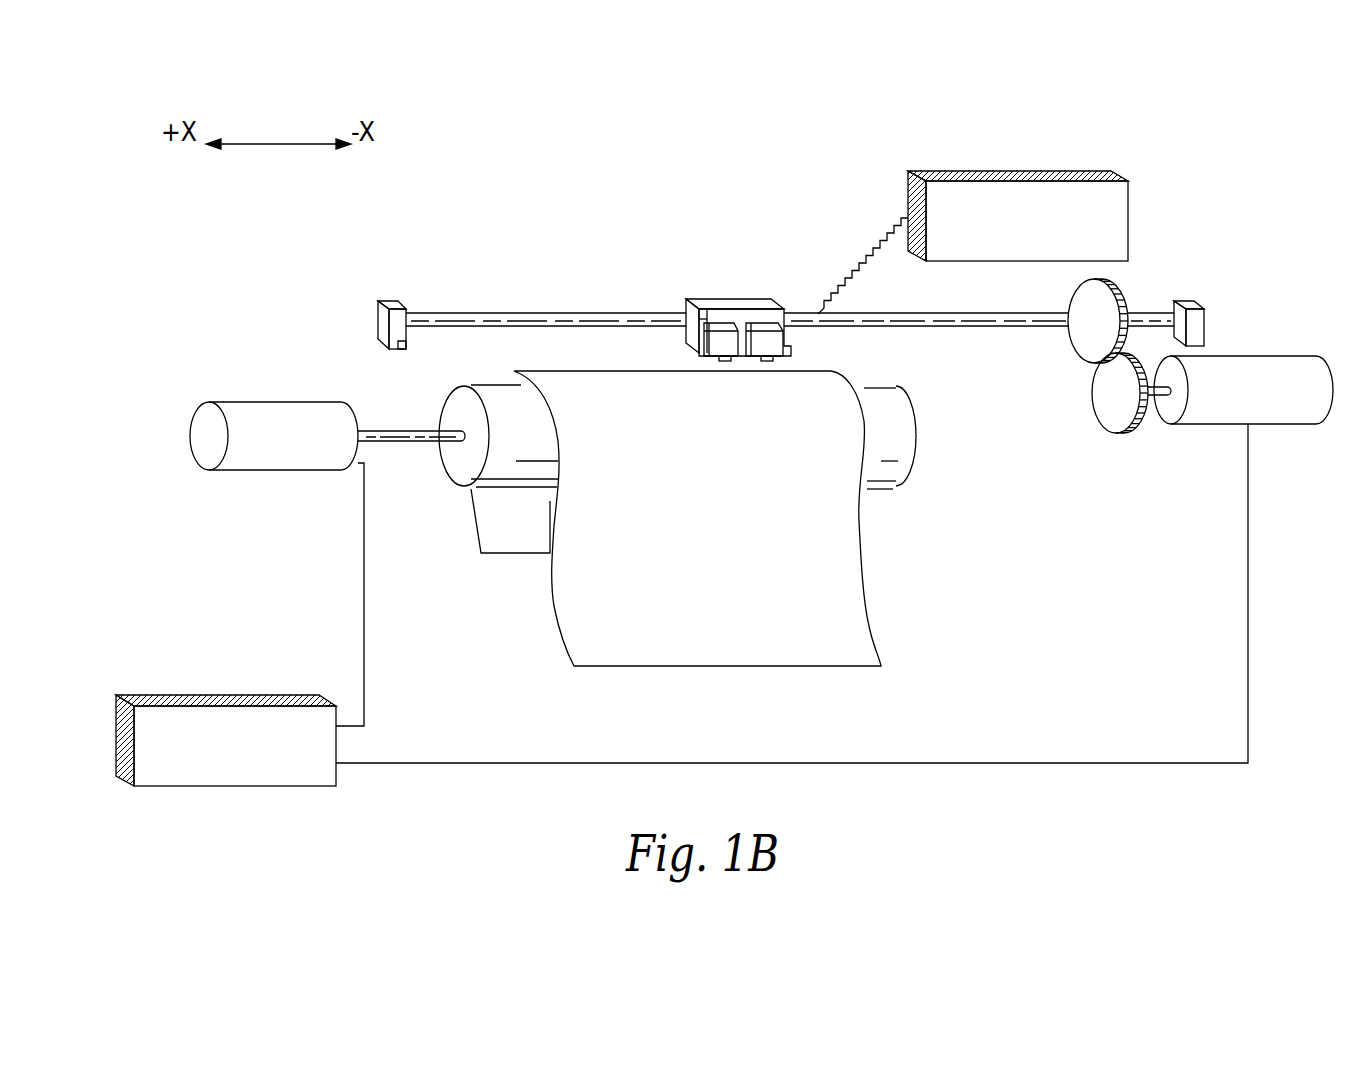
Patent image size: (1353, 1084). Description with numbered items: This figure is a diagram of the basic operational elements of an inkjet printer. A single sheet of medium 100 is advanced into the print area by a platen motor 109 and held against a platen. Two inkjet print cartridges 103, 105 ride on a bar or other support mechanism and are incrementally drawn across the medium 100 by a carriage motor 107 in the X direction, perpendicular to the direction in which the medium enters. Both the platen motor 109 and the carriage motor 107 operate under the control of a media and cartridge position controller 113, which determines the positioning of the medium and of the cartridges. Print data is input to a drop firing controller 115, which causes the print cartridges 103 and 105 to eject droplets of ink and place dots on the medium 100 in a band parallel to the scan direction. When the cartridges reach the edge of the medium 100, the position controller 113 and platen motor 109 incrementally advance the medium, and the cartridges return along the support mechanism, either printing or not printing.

The medium 100 is at (620, 668).
The inkjet print cartridge 103 is at (720, 318).
The inkjet print cartridge 105 is at (757, 317).
The carriage motor 107 is at (1207, 424).
The platen motor 109 is at (235, 401).
The media and cartridge position controller 113 is at (258, 786).
The drop firing controller 115 is at (1127, 187).